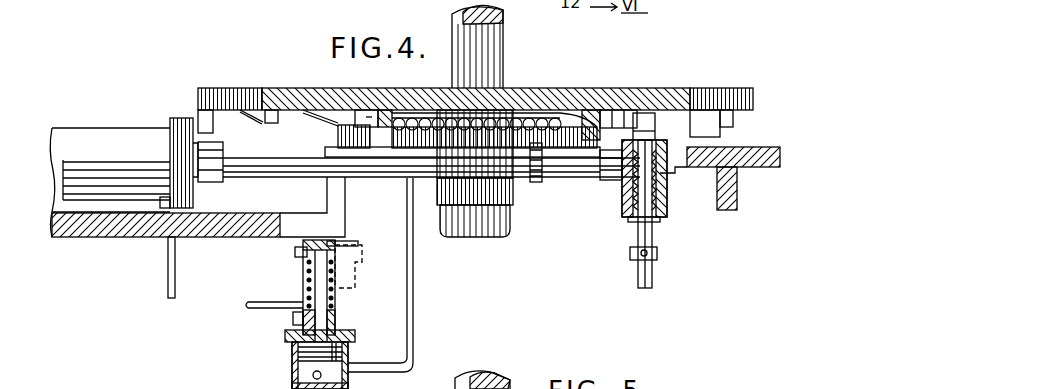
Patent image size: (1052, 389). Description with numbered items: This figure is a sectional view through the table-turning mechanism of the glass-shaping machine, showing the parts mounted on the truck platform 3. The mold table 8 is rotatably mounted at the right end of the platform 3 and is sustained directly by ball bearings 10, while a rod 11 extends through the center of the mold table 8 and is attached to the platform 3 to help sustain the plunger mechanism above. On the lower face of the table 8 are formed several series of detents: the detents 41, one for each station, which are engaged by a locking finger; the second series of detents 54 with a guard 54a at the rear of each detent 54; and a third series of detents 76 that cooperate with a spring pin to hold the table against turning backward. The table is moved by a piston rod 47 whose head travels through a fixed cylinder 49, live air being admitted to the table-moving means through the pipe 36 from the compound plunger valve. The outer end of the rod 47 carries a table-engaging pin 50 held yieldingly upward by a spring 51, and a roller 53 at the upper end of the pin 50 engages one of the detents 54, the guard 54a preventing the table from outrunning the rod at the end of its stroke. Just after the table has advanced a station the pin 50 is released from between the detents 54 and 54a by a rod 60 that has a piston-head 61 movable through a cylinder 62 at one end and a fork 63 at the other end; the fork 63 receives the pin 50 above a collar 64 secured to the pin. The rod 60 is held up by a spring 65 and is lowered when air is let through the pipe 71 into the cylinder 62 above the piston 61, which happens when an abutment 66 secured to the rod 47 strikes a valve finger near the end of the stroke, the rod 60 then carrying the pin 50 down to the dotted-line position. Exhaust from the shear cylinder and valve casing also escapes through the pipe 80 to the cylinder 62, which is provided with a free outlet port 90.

The platform 3 is at (84, 238).
The mold table 8 is at (475, 86).
The ball bearings 10 is at (517, 110).
The rod 11 is at (503, 35).
The pipe 36 is at (163, 262).
The detents 41 is at (213, 126).
The piston rod 47 is at (521, 165).
The fixed cylinder 49 is at (118, 128).
The table-engaging pin 50 is at (653, 238).
The spring 51 is at (667, 195).
The roller 53 is at (652, 122).
The detents 54 is at (338, 122).
The guards 54a is at (385, 108).
The rod 60 is at (317, 287).
The piston-head 61 is at (292, 355).
The cylinder 62 is at (348, 386).
The fork 63 is at (360, 243).
The collar 64 is at (630, 256).
The spring 65 is at (334, 302).
The abutment 66 is at (538, 181).
The pipe 71 is at (258, 308).
The detents 76 is at (269, 123).
The pipe 80 is at (414, 318).
The free outlet port 90 is at (313, 375).